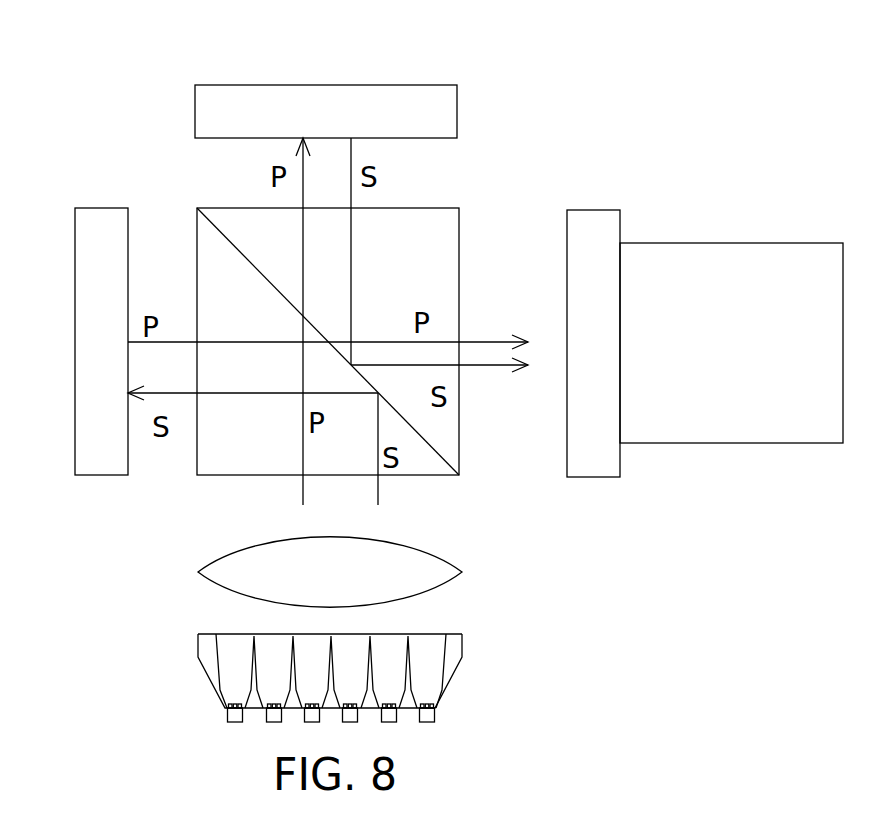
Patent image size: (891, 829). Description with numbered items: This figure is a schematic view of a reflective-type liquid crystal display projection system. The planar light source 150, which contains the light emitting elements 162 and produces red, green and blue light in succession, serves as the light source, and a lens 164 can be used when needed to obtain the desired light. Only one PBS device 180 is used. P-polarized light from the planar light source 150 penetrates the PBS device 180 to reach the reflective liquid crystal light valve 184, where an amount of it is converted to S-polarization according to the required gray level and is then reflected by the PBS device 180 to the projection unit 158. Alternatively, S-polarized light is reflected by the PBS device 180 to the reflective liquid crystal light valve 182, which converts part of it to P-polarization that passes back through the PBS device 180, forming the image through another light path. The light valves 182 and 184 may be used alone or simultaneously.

The planar light source 150 is at (490, 690).
The projection unit 158 is at (688, 243).
The light emitting diodes (r,g,b) 162 is at (228, 707).
The lens 164 is at (462, 572).
The PBS device 180 is at (445, 208).
The reflective liquid crystal light valve 182 is at (100, 208).
The reflective liquid crystal light valve 184 is at (315, 85).